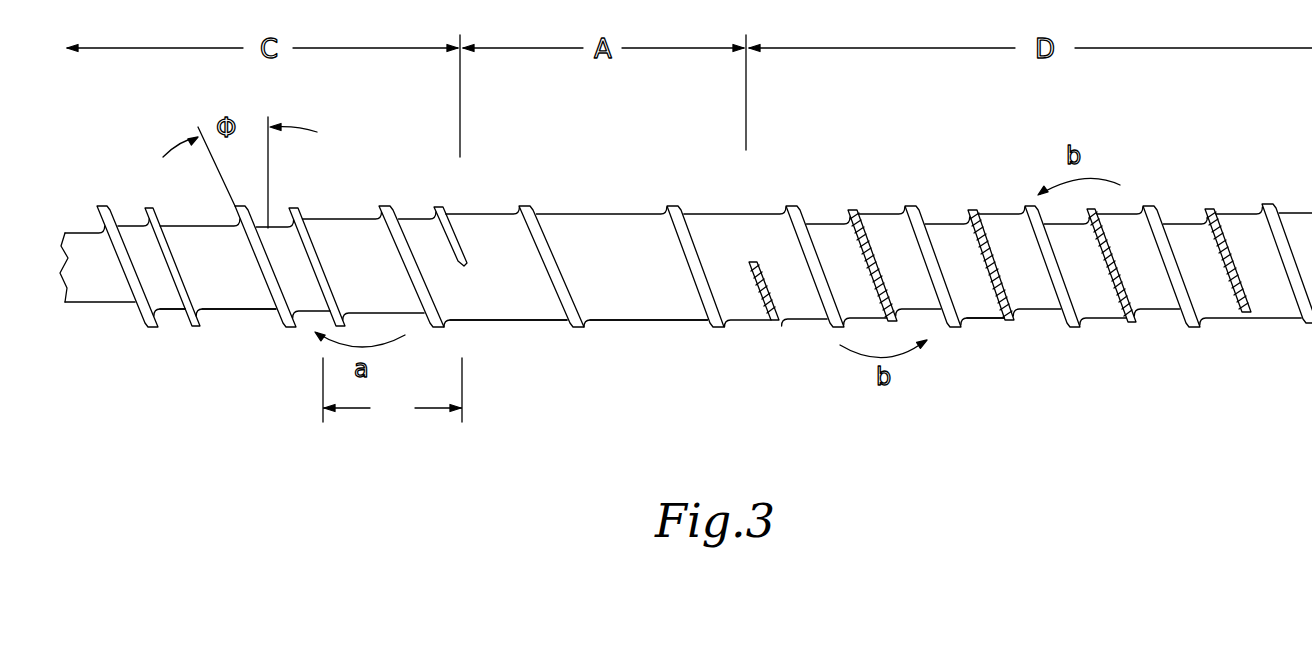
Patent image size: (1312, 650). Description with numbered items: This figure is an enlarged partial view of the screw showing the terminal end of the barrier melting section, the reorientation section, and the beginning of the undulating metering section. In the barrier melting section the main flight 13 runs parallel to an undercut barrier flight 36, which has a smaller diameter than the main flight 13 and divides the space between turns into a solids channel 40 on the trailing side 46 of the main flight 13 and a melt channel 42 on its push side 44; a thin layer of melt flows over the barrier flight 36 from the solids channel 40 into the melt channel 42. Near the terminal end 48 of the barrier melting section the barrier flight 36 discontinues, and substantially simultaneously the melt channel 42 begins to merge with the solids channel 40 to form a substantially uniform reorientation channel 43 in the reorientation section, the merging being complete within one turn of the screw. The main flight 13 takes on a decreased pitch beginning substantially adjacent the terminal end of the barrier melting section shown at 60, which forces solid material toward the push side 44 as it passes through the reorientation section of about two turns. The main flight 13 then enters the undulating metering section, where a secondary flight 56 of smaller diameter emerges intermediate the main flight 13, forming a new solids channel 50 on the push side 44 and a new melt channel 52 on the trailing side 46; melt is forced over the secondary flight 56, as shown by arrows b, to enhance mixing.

The main flight 13 is at (99, 204).
The barrier flight 36 is at (205, 328).
The solids channel 40 is at (245, 311).
The melt channel 42 is at (180, 311).
The reorientation channel 43 is at (623, 321).
The push side 44 is at (398, 212).
The trailing side 46 is at (378, 208).
The terminal end 48 is at (392, 390).
The new solids channel 50 is at (997, 322).
The new melt channel 52 is at (883, 213).
The secondary flight 56 is at (970, 210).
The terminal end of the barrier melting section 60 is at (553, 263).